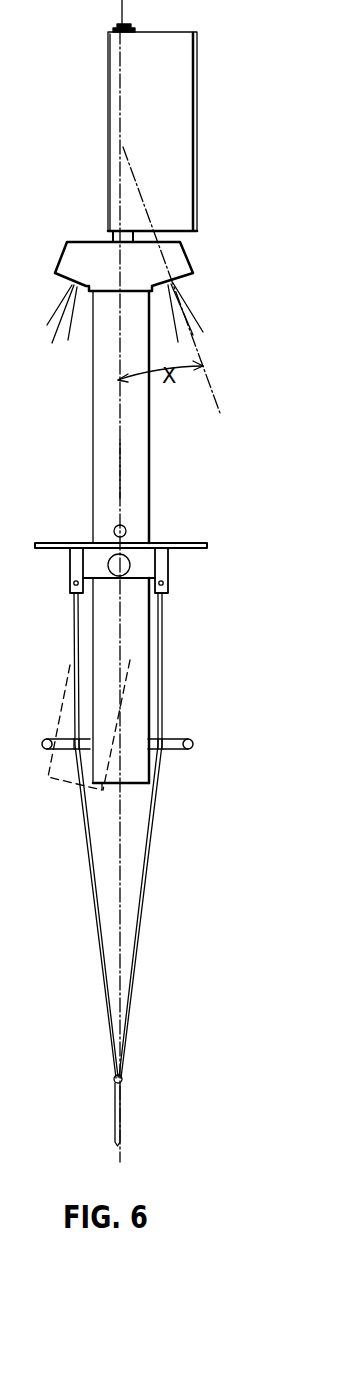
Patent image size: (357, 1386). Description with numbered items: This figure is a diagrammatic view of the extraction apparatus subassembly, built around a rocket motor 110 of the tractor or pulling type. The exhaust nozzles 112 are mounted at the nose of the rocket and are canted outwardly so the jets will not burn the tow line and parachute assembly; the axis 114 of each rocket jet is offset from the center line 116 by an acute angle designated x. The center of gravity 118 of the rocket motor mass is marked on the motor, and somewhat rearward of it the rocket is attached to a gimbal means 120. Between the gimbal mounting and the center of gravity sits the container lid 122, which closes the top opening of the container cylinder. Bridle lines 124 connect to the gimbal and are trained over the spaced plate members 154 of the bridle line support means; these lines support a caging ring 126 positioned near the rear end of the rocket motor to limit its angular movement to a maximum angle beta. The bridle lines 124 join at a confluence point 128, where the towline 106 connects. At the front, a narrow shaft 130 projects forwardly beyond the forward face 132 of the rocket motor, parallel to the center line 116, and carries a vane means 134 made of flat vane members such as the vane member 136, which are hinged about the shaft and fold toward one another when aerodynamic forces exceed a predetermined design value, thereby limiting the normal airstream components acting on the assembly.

The towline 106 is at (120, 1120).
The rocket motor 110 is at (102, 440).
The exhaust nozzles 112 is at (180, 262).
The axis of rocket jet 114 is at (208, 387).
The center line 116 is at (122, 465).
The center of gravity 118 is at (114, 529).
The gimbal means 120 is at (139, 565).
The container lid 122 is at (182, 543).
The bridle lines 124 is at (145, 885).
The caging ring 126 is at (45, 740).
The confluence point 128 is at (113, 1082).
The shaft 130 is at (113, 27).
The forward face 132 is at (87, 240).
The vane means 134 is at (204, 117).
The vane member 136 is at (183, 192).
The plate members 154 is at (68, 583).